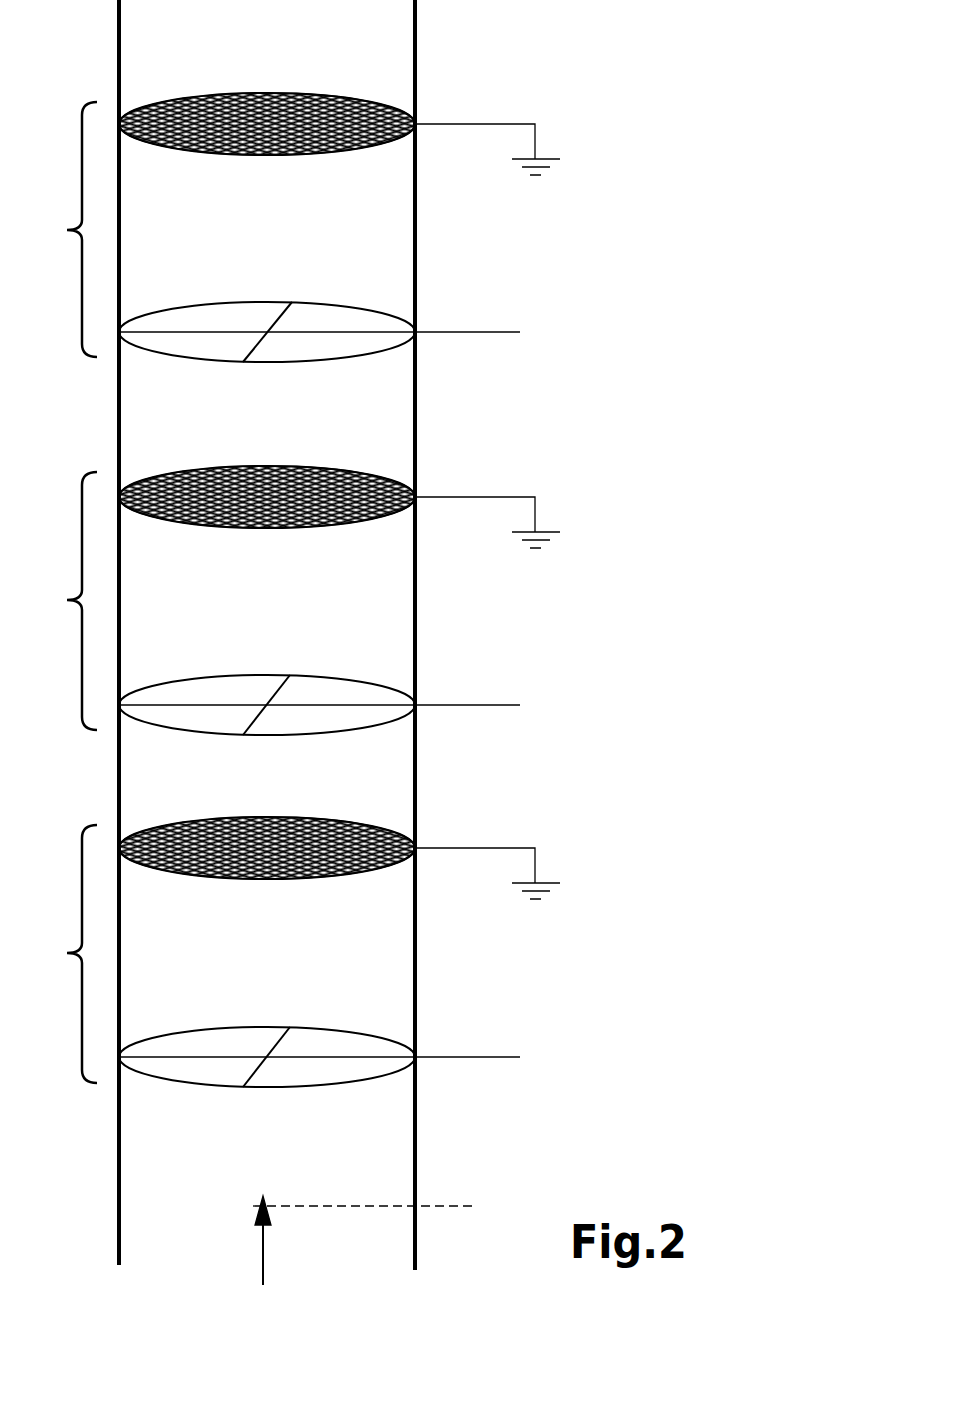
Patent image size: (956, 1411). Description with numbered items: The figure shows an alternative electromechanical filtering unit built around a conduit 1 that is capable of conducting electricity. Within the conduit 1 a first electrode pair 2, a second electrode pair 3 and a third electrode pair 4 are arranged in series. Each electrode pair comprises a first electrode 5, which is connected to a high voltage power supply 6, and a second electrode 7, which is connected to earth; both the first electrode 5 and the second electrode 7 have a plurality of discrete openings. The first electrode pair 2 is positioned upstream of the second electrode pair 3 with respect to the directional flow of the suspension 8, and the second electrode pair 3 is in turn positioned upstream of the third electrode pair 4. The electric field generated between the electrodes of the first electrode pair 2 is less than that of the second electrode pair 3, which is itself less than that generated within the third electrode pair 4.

The conduit 1 is at (415, 1203).
The first electrode pair 2 is at (68, 954).
The second electrode pair 3 is at (70, 601).
The third electrode pair 4 is at (70, 229).
The first electrode 5 is at (357, 308).
The high voltage power supply 6 is at (557, 315).
The second electrode 7 is at (365, 98).
The suspension 8 is at (263, 1247).